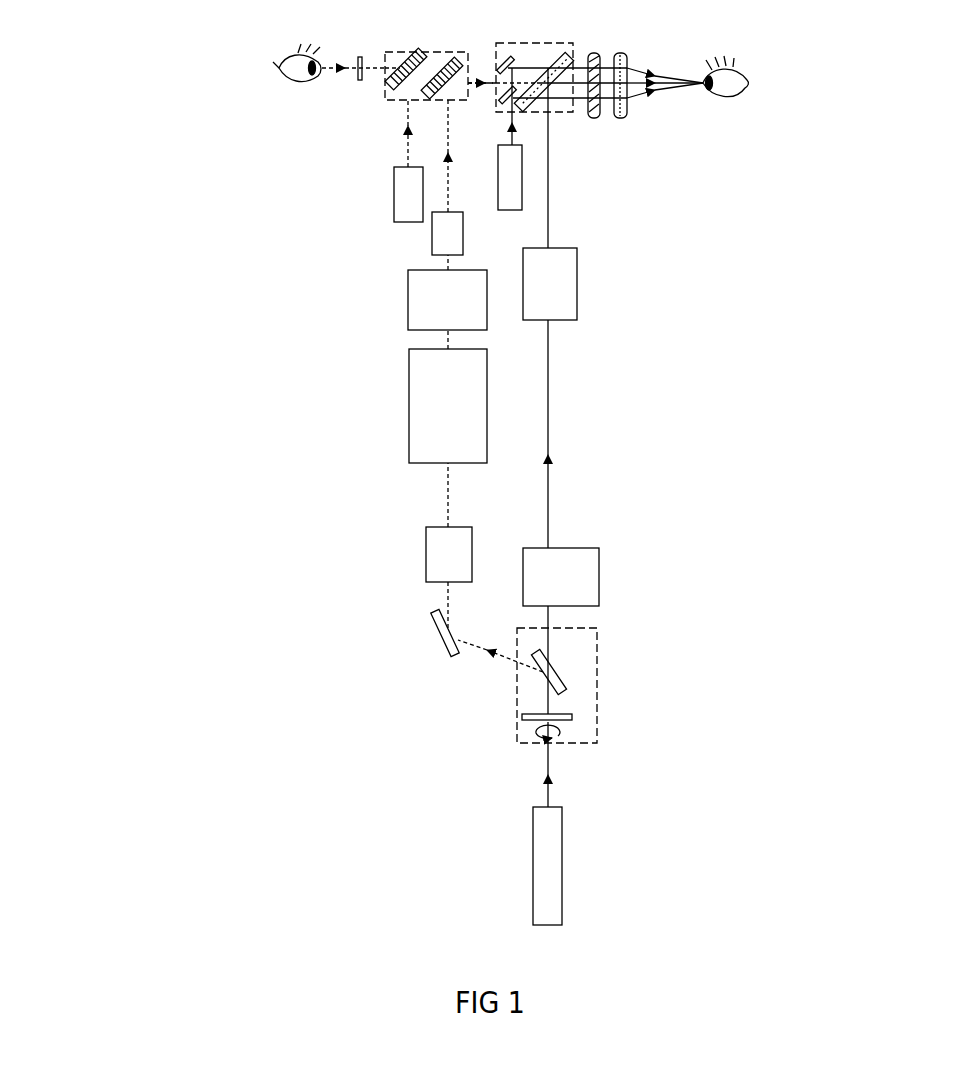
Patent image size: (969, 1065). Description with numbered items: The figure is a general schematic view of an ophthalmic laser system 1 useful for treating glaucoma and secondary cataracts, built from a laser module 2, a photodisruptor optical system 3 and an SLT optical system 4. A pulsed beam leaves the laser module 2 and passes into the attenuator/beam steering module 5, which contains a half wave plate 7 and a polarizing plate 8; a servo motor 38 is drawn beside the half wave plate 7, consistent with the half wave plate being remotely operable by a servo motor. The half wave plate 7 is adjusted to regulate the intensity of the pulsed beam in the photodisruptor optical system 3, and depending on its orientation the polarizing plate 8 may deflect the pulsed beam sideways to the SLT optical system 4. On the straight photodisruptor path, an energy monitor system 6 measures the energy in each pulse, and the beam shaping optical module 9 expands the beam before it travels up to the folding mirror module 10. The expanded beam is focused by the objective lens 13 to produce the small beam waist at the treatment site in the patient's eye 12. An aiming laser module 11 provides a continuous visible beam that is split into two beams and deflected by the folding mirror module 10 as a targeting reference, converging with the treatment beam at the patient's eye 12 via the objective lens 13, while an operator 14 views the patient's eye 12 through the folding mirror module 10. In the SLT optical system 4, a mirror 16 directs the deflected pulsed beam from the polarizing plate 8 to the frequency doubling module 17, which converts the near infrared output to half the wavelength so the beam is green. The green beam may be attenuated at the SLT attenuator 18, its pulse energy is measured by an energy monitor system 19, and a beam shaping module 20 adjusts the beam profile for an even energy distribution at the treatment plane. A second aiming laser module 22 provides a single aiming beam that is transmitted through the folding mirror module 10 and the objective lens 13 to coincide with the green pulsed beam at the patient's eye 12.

The ophthalmic laser system 1 is at (235, 705).
The laser module 2 is at (533, 822).
The photodisruptor optical system 3 is at (708, 445).
The SLT optical system 4 is at (305, 465).
The attenuator/beam steering module 5 is at (597, 692).
The energy monitor system 6 is at (599, 573).
The half wave plate 7 is at (522, 716).
The polarizing plate 8 is at (548, 670).
The beam shaping optical module 9 is at (577, 295).
The folding mirror module 10 is at (555, 43).
The aiming laser module 11 is at (522, 180).
The patient's eye 12 is at (727, 100).
The objective lens 13 is at (615, 118).
The operator 14 is at (298, 83).
The mirror 16 is at (432, 617).
The frequency doubling module 17 is at (426, 551).
The SLT attenuator 18 is at (409, 393).
The energy monitor system 19 is at (408, 303).
The beam shaping module 20 is at (432, 236).
The second aiming laser module 22 is at (400, 191).
The servo motor 38 is at (567, 732).